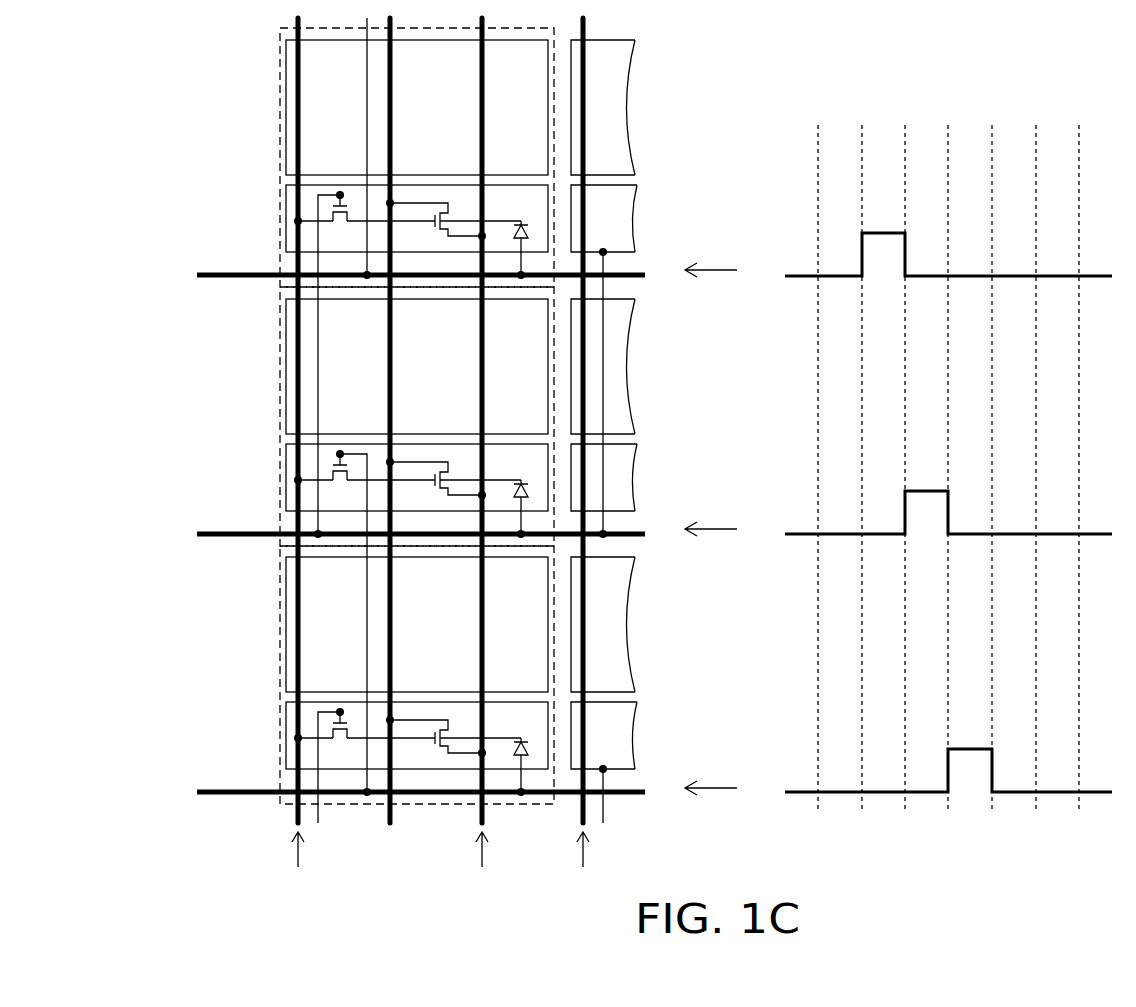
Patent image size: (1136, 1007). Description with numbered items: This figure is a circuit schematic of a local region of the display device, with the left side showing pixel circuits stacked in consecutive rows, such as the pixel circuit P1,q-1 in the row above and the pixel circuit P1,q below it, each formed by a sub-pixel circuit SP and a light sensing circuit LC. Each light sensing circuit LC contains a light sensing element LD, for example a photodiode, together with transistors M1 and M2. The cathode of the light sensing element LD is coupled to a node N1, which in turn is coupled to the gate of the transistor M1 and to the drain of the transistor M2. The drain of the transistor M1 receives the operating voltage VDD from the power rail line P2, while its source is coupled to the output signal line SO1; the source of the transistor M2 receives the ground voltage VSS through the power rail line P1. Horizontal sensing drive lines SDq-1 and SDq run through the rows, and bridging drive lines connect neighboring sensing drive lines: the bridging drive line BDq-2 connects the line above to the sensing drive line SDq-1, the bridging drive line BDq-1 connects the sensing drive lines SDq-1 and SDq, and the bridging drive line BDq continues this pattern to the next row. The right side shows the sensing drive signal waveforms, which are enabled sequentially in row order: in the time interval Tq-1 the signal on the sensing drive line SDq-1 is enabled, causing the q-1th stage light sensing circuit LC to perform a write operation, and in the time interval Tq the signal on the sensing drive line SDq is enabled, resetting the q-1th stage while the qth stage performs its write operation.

The sub-pixel circuit SP is at (286, 93).
The light sensing circuit LC is at (286, 205).
The pixel circuit P1,q-1 is at (280, 146).
The pixel circuit P1,q is at (280, 378).
The sensing drive line SDq-1 is at (618, 262).
The sensing drive line SDq is at (630, 522).
The bridging drive line BDq-2 is at (367, 73).
The bridging drive line BDq-1 is at (318, 350).
The bridging drive line BDq is at (367, 593).
The transistor M1 is at (436, 478).
The transistor M2 is at (364, 466).
The node N1 is at (518, 221).
The light sensing element LD is at (528, 497).
The power rail line P1 is at (292, 812).
The output signal line SO1 is at (390, 438).
The power rail line P2 is at (477, 812).
The ground voltage VSS is at (443, 461).
The operating voltage VDD is at (486, 868).
The time interval Tq-1 is at (883, 501).
The time interval Tq is at (930, 501).